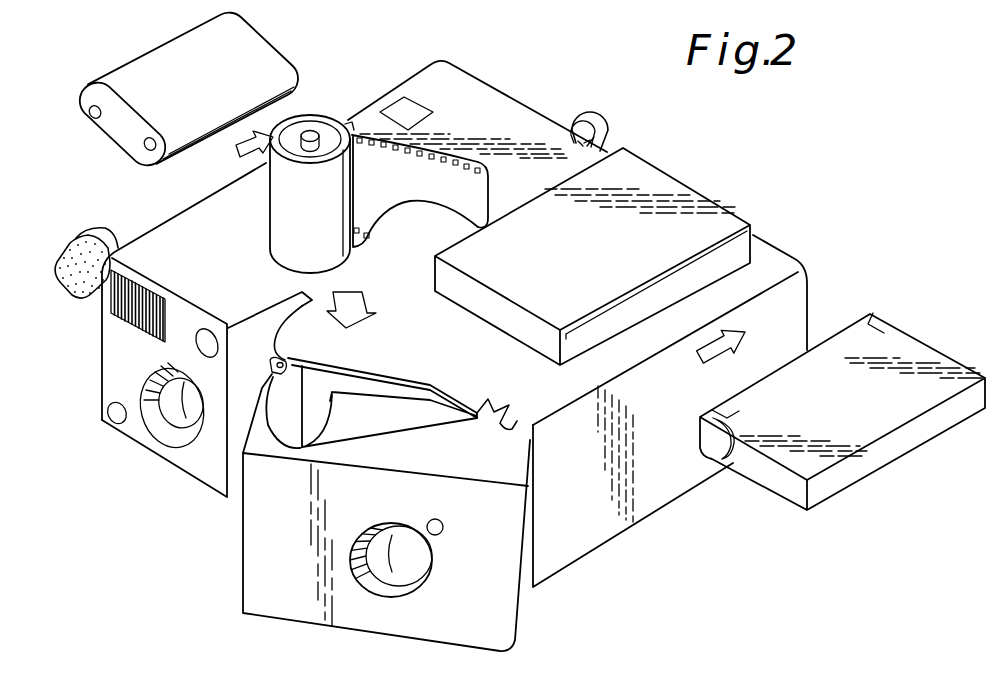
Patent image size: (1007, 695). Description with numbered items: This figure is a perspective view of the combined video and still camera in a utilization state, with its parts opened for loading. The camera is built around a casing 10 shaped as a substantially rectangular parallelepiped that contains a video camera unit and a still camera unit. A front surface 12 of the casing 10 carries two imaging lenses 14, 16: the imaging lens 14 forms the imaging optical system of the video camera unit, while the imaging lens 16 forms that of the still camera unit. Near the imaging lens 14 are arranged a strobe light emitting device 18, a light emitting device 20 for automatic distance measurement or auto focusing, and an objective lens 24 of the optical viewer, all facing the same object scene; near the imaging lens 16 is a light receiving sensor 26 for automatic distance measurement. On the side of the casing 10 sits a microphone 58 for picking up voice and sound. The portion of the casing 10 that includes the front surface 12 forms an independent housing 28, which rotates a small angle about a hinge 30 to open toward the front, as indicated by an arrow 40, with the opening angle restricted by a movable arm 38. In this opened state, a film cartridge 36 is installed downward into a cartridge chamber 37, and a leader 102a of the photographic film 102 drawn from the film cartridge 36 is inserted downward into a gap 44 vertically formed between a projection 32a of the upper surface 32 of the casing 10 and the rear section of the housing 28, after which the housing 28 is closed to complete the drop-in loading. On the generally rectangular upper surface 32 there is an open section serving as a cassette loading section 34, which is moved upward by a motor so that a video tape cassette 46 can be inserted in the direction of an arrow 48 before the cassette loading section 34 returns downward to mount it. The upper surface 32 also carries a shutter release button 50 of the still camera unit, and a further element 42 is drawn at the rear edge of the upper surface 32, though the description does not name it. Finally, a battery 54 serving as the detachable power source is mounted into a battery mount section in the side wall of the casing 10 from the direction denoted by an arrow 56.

The casing 10 is at (182, 212).
The front surface 12 is at (118, 353).
The imaging lens 14 is at (178, 397).
The imaging lens 16 is at (402, 574).
The strobe light emitting device 18 is at (121, 296).
The light emitting device 20 is at (112, 426).
The objective lens 24 is at (203, 329).
The light receiving sensor 26 is at (440, 536).
The housing 28 is at (254, 587).
The hinge 30 is at (517, 421).
The upper surface 32 is at (478, 94).
The projection 32a is at (288, 338).
The cassette loading section 34 is at (678, 192).
The film cartridge 36 is at (278, 213).
The cartridge chamber 37 is at (287, 428).
The movable arm 38 is at (275, 360).
The arrow 40 is at (368, 300).
The knob 42 is at (601, 118).
The gap 44 is at (405, 389).
The video tape cassette 46 is at (760, 487).
The arrow 48 is at (703, 366).
The shutter release button 50 is at (404, 99).
The battery 54 is at (265, 52).
The arrow 56 is at (240, 152).
The microphone 58 is at (83, 246).
The photographic film 102 is at (365, 133).
The leader 102a is at (480, 163).